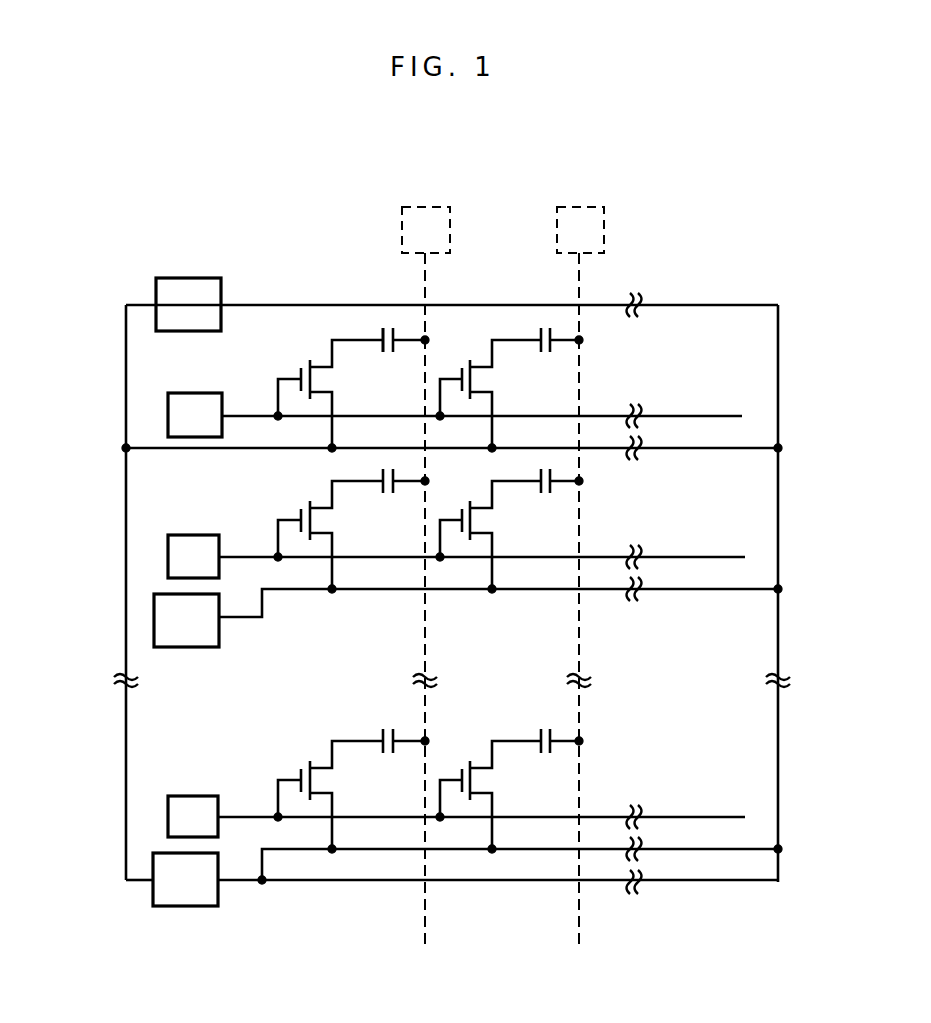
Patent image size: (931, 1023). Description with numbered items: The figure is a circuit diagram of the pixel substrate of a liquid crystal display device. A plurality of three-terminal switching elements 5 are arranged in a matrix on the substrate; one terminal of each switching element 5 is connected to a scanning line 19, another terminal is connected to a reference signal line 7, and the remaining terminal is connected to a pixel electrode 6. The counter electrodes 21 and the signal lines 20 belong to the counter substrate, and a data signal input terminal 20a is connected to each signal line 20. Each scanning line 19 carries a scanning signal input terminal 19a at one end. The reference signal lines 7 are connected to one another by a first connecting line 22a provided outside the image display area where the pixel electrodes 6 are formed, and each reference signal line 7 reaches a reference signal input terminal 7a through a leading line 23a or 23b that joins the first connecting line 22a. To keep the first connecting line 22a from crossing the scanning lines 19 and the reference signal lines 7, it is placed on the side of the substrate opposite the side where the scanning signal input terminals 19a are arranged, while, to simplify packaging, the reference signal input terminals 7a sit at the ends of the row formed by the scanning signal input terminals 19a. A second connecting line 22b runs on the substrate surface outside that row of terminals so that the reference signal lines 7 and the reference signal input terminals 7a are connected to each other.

The three-terminal switching element 5 is at (298, 372).
The pixel electrode 6 is at (380, 326).
The reference signal line 7 is at (247, 449).
The reference signal input terminal 7a is at (181, 278).
The scanning line 19 is at (243, 412).
The scanning signal input terminal 19a is at (169, 414).
The signal line 20 is at (426, 276).
The data signal input terminal 20a is at (426, 205).
The counter electrode 21 is at (395, 326).
The first connecting line 22a is at (778, 508).
The second connecting line 22b is at (126, 498).
The leading line 23a is at (256, 305).
The leading line 23b is at (338, 883).